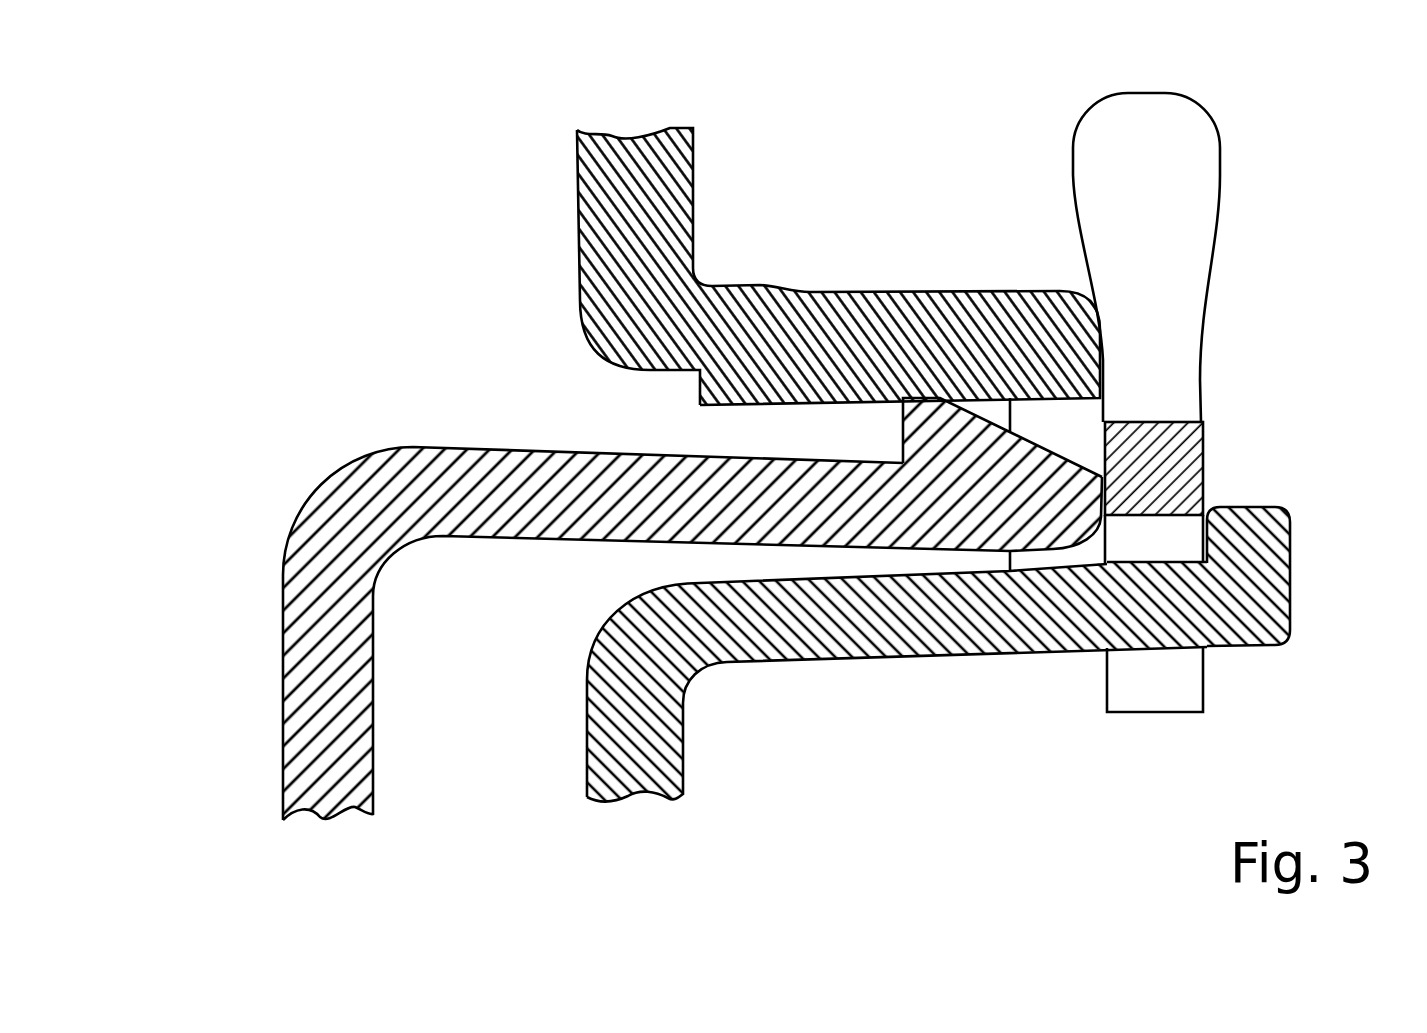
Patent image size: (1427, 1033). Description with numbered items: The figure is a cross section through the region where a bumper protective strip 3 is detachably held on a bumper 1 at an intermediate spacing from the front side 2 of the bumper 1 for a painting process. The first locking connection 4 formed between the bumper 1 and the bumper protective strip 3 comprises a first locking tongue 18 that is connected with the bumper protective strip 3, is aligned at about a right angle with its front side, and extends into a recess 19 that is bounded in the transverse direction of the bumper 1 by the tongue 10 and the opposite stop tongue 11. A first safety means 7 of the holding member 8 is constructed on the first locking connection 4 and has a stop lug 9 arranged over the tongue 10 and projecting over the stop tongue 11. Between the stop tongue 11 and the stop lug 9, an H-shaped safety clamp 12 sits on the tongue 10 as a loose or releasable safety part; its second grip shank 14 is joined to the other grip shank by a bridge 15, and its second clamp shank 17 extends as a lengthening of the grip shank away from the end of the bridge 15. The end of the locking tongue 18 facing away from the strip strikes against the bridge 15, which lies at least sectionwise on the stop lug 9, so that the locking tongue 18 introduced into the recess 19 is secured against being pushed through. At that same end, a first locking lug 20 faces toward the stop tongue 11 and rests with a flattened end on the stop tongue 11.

The bumper 1 is at (630, 213).
The front side 2 is at (253, 419).
The bumper protective strip 3 is at (320, 678).
The first locking connection 4 is at (858, 438).
The first safety means 7 is at (1246, 410).
The holding member 8 is at (1261, 241).
The stop lug 9 is at (1243, 563).
The tongue 10 is at (917, 616).
The stop tongue 11 is at (873, 358).
The safety clamp 12 is at (1244, 337).
The second grip shank 14 is at (1140, 150).
The bridge 15 is at (1172, 472).
The second clamp shank 17 is at (1158, 547).
The locking tongue 18 is at (583, 480).
The recess 19 is at (757, 564).
The first locking lug 20 is at (912, 436).